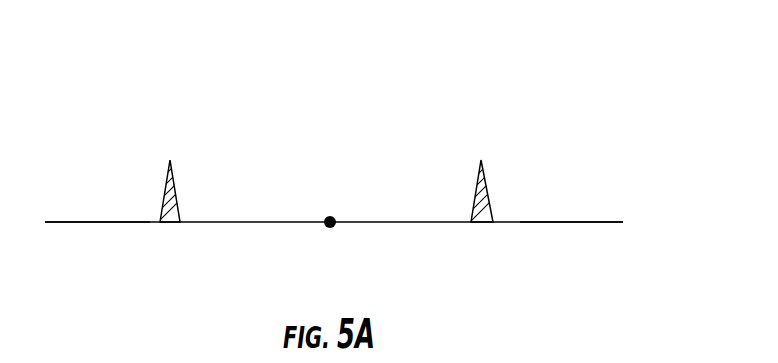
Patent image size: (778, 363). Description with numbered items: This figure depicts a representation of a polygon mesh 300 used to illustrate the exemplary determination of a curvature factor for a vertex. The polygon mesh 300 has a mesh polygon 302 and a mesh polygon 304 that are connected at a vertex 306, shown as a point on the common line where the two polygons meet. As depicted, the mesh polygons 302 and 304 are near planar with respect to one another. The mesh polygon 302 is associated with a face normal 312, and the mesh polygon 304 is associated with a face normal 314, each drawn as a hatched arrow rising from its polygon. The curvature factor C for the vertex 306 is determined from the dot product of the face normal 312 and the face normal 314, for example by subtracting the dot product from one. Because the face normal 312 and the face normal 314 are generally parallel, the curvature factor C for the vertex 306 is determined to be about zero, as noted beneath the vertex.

The polygon mesh 300 is at (600, 63).
The mesh polygon 302 is at (108, 221).
The mesh polygon 304 is at (610, 221).
The vertex 306 is at (330, 222).
The face normal 312 is at (178, 188).
The face normal 314 is at (488, 181).